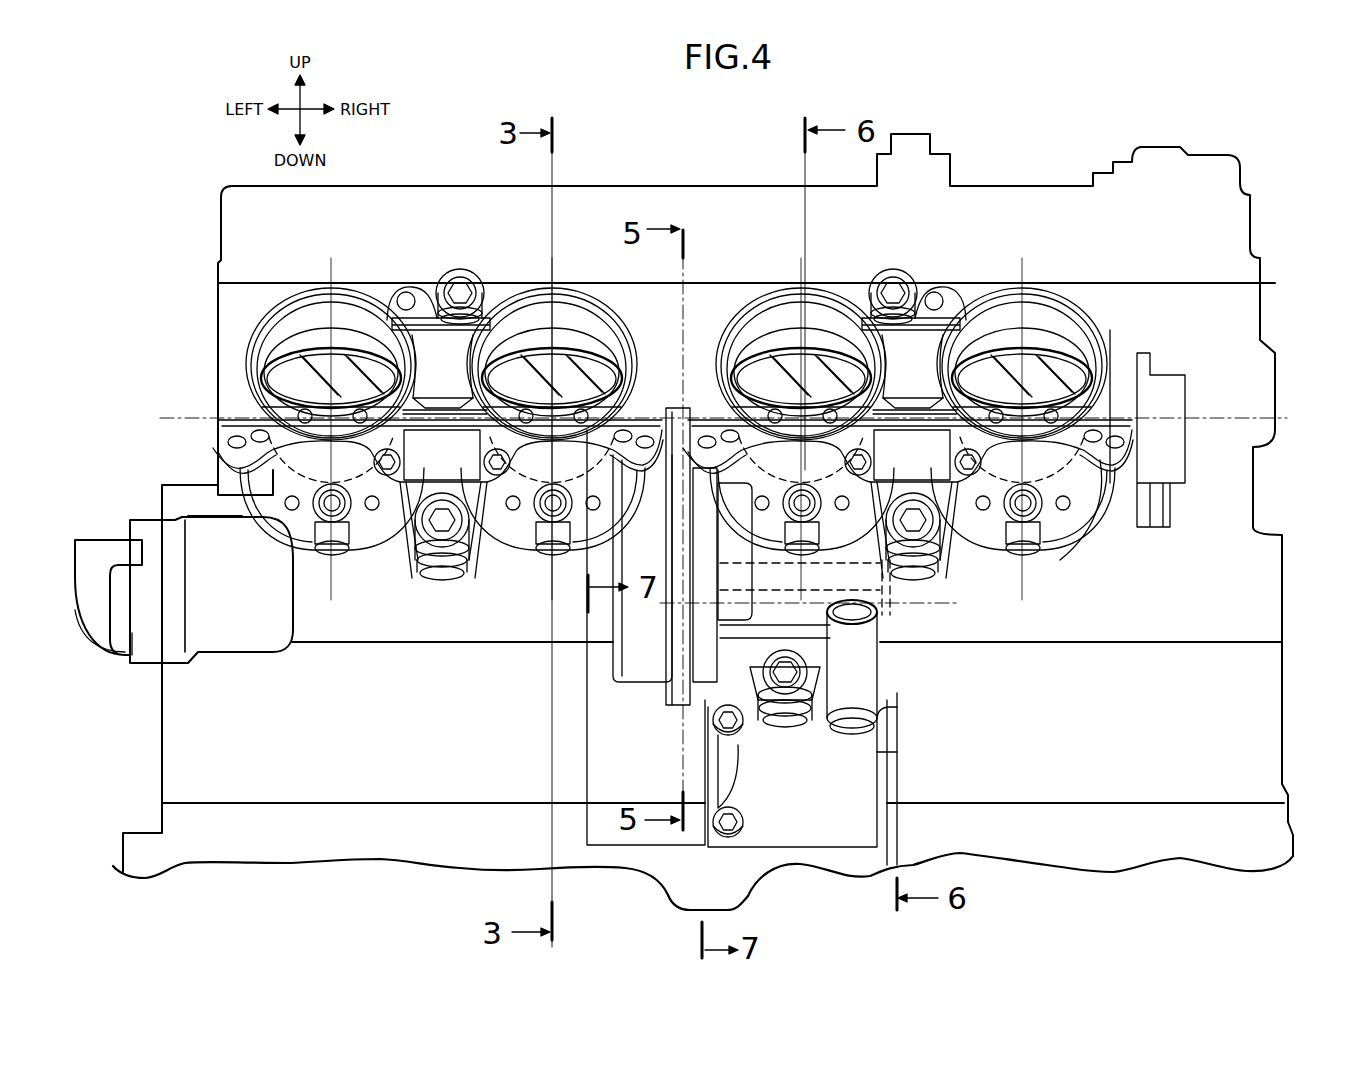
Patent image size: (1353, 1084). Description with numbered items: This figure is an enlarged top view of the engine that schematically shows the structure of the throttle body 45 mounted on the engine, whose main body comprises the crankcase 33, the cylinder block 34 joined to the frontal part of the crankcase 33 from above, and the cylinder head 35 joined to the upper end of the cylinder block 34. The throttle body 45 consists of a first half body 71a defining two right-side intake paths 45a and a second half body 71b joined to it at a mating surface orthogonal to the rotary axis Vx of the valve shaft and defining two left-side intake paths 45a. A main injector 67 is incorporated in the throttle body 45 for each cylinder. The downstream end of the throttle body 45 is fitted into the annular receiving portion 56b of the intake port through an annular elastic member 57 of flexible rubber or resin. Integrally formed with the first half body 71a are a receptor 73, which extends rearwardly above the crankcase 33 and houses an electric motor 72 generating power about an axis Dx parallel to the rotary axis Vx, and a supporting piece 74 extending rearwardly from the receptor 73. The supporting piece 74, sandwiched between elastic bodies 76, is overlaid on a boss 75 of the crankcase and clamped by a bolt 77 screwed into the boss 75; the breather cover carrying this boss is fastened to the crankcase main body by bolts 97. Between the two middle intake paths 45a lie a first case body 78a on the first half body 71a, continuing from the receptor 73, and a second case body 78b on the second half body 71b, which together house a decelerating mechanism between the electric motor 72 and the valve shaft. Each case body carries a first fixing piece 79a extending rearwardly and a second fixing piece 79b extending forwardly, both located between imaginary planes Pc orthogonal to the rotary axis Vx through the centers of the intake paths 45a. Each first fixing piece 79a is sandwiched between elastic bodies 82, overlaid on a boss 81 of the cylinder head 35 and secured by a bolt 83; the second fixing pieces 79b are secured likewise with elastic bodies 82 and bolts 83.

The crankcase 33 is at (1270, 841).
The cylinder block 34 is at (1268, 741).
The cylinder head 35 is at (1258, 604).
The throttle body 45 is at (214, 337).
The intake path 45a is at (275, 322).
The receiving portion 56b is at (1060, 552).
The annular elastic member 57 is at (262, 520).
The main injector 67 is at (318, 510).
The first half body 71a is at (998, 300).
The second half body 71b is at (345, 292).
The electric motor 72 is at (897, 637).
The receptor 73 is at (880, 614).
The supporting piece 74 is at (750, 672).
The boss 75 is at (793, 733).
The elastic body 76 is at (833, 712).
The bolt 77 is at (787, 668).
The first case body 78a is at (698, 667).
The second case body 78b is at (653, 676).
The first fixing piece 79a is at (410, 497).
The second fixing piece 79b is at (427, 300).
The boss 81 is at (438, 578).
The elastic body 82 is at (480, 300).
The bolt 83 is at (460, 284).
The bolt 97 is at (738, 730).
The imaginary plane Pc is at (1028, 275).
The axis Dx is at (705, 603).
The rotary axis Vx is at (1196, 412).